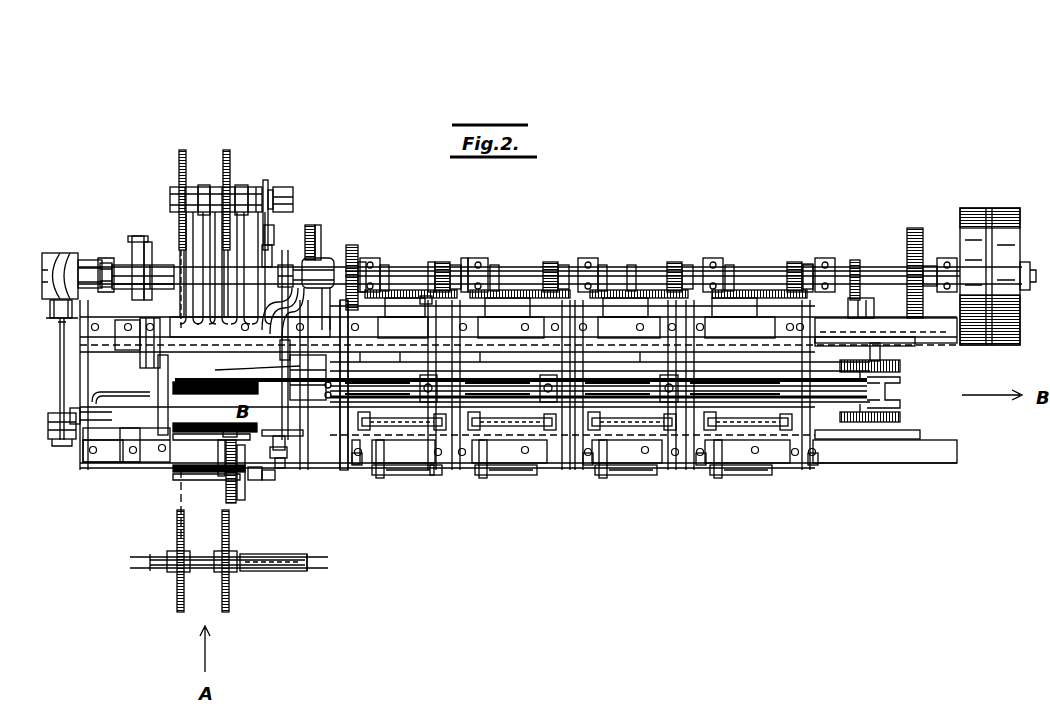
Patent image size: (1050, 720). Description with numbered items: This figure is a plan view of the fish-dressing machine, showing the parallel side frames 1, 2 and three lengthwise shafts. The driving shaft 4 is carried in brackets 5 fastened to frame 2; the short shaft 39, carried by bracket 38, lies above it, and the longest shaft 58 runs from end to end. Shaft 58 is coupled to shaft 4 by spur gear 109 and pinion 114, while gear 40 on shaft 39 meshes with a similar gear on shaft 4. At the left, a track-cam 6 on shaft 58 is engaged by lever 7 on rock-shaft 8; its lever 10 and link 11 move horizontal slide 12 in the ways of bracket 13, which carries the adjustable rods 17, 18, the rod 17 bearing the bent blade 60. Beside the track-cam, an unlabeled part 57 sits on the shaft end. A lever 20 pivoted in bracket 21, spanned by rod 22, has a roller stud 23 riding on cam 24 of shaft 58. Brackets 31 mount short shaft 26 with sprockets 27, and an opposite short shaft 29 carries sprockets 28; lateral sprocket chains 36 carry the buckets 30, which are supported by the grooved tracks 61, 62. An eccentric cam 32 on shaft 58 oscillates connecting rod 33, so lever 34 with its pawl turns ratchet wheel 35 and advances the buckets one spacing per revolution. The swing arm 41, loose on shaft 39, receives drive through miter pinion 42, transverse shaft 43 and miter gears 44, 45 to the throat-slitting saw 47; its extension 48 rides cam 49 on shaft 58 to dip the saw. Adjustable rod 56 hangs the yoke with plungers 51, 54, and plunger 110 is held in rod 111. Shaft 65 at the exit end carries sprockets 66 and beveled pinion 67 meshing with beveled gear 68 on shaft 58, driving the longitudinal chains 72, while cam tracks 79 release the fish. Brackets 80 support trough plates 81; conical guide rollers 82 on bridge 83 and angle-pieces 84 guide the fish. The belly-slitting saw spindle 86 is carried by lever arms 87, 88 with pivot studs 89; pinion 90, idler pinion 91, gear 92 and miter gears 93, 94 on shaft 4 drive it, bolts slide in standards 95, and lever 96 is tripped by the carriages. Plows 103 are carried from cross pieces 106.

The side frame 1 is at (885, 454).
The side frame 2 is at (886, 331).
The driving shaft 4 is at (1020, 242).
The brackets 5 is at (372, 258).
The track-cam 6 is at (58, 258).
The lever 7 is at (50, 307).
The rock-shaft 8 is at (58, 362).
The lever 10 is at (48, 423).
The link 11 is at (76, 410).
The horizontal slide 12 is at (158, 453).
The bracket 13 is at (112, 463).
The adjustable rod 17 is at (162, 397).
The adjustable rod 18 is at (155, 448).
The lever 20 is at (118, 359).
The bracket 21 is at (150, 343).
The rod 22 is at (108, 392).
The roller stud 23 is at (140, 230).
The cam 24 is at (150, 242).
The short shaft 26 is at (170, 198).
The sprockets 27 is at (187, 164).
The sprockets 28 is at (184, 574).
The short shaft 29 is at (258, 570).
The buckets 30 is at (204, 397).
The brackets 31 is at (206, 182).
The eccentric cam 32 is at (272, 256).
The connecting rod 33 is at (276, 236).
The lever 34 is at (288, 191).
The ratchet wheel 35 is at (268, 184).
The sprocket chains 36 is at (228, 323).
The bracket 38 is at (323, 302).
The shaft 39 is at (368, 258).
The gear 40 is at (353, 245).
The swing arm 41 is at (328, 256).
The miter pinion 42 is at (292, 264).
The transverse shaft 43 is at (280, 352).
The miter gear 44 is at (288, 458).
The miter gear 45 is at (284, 468).
The throat-slitting saw 47 is at (236, 505).
The extension 48 is at (313, 225).
The cam 49 is at (319, 230).
The double rod plunger 51 is at (258, 482).
The plunger 54 is at (221, 478).
The adjustable rod 56 is at (276, 482).
The bolt 57 is at (104, 262).
The shaft 58 is at (168, 265).
The bent blade 60 is at (200, 392).
The grooved track 61 is at (160, 488).
The grooved track 62 is at (242, 500).
The shaft 65 is at (878, 352).
The sprockets 66 is at (880, 364).
The beveled pinion 67 is at (858, 305).
The beveled gear 68 is at (855, 260).
The longitudinal chains 72 is at (915, 344).
The cam tracks 79 is at (900, 384).
The brackets 80 is at (808, 264).
The trough plates 81 is at (770, 380).
The conical guide rollers 82 is at (325, 388).
The bridge 83 is at (354, 464).
The angle-pieces 84 is at (382, 476).
The spindle 86 is at (372, 346).
The lever arm 87 is at (412, 475).
The lever arm 88 is at (410, 300).
The pivot stud 89 is at (432, 303).
The pinion 90 is at (392, 258).
The idler pinion 91 is at (395, 290).
The gear 92 is at (448, 262).
The miter gear 93 is at (434, 262).
The miter gear 94 is at (464, 258).
The standard 95 is at (412, 328).
The lever 96 is at (388, 424).
The plow 103 is at (514, 374).
The cross piece 106 is at (436, 357).
The spur gear 109 is at (916, 228).
The plunger 110 is at (230, 425).
The rod 111 is at (290, 437).
The pinion 114 is at (906, 268).